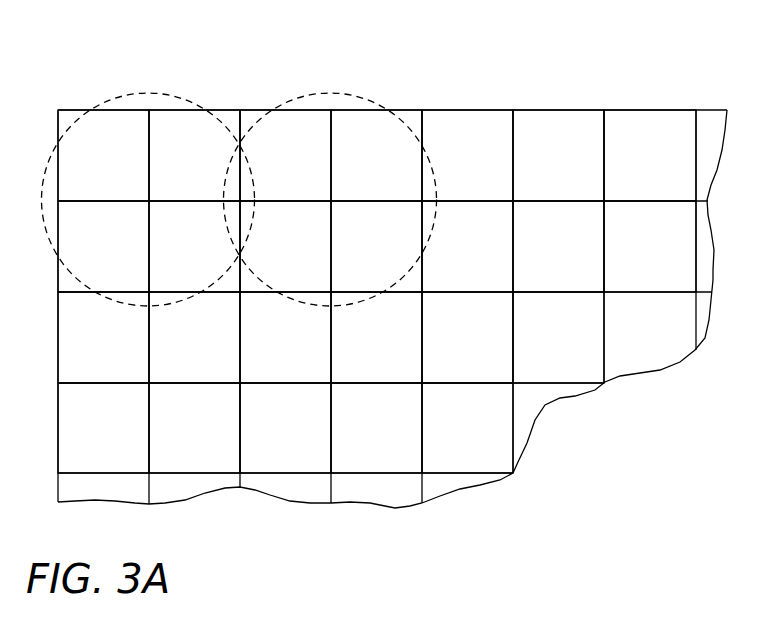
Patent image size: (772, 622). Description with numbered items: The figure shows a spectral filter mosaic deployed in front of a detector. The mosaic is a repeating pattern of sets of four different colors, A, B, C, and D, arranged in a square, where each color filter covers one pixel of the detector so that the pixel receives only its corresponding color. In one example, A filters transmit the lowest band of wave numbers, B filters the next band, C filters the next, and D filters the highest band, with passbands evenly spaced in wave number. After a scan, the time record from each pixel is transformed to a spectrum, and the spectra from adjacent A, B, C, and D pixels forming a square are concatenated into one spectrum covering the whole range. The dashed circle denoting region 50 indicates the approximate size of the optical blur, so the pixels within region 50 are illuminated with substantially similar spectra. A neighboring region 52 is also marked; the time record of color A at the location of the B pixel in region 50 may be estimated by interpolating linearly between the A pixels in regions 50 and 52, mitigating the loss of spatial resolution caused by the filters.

The region 50 is at (149, 93).
The region 52 is at (331, 93).
The color A filter A is at (377, 246).
The color B filter B is at (376, 246).
The color C filter C is at (377, 337).
The color D filter D is at (376, 337).